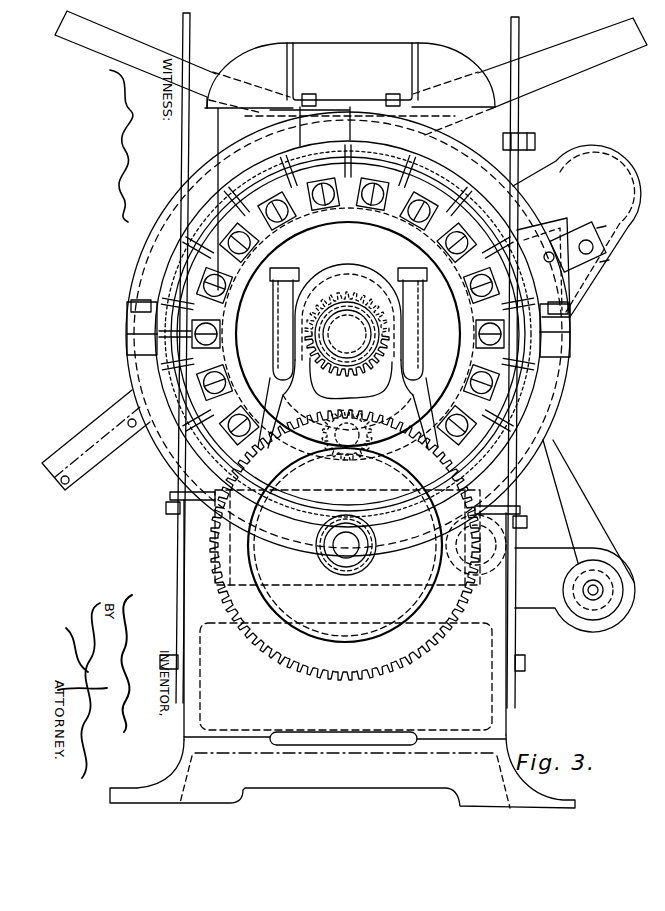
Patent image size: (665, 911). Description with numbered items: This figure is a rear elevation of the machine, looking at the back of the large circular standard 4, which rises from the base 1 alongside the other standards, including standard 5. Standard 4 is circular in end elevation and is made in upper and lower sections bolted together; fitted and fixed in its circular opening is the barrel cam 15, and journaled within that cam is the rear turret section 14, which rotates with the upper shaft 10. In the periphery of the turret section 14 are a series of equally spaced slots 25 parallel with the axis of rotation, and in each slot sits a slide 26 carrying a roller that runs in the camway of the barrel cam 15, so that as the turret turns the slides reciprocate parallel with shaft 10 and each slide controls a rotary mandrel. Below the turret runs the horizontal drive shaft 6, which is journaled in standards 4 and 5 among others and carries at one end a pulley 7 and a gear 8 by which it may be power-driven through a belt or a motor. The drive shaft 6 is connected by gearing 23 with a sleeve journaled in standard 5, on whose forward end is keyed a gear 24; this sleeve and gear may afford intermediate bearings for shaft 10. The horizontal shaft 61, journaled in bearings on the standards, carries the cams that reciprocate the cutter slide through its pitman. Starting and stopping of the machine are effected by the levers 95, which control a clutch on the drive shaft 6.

The base 1 is at (507, 642).
The standard 4 is at (558, 392).
The standard 5 is at (418, 371).
The drive shaft 6 is at (346, 566).
The pulley 7 is at (347, 642).
The gear 8 is at (352, 681).
The shaft 10 is at (347, 345).
The rear turret section 14 is at (448, 266).
The barrel cam 15 is at (427, 247).
The gearing 23 is at (424, 417).
The gear 24 is at (272, 331).
The slots 25 is at (570, 333).
The slide 26 is at (355, 223).
The horizontal shaft 61 is at (597, 247).
The levers 95 is at (189, 133).